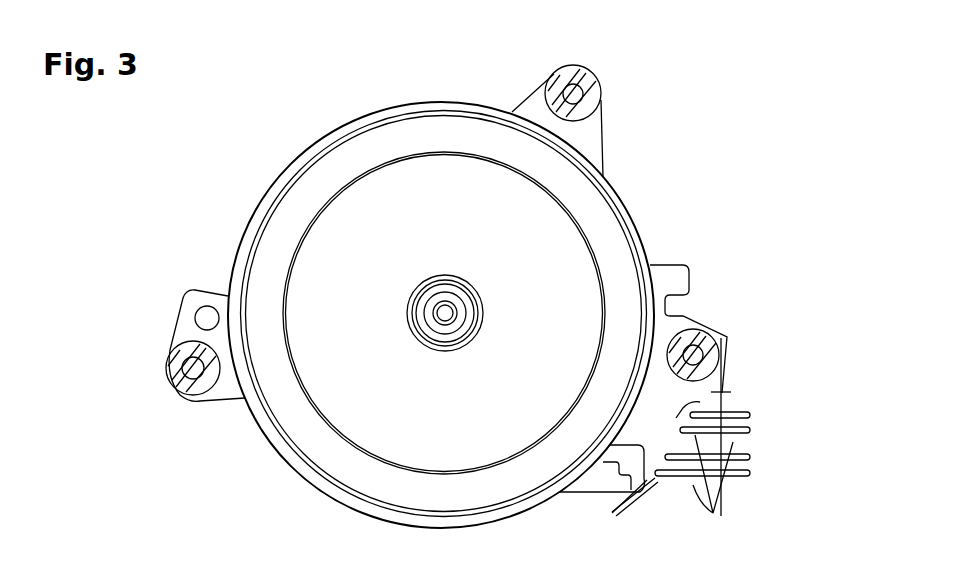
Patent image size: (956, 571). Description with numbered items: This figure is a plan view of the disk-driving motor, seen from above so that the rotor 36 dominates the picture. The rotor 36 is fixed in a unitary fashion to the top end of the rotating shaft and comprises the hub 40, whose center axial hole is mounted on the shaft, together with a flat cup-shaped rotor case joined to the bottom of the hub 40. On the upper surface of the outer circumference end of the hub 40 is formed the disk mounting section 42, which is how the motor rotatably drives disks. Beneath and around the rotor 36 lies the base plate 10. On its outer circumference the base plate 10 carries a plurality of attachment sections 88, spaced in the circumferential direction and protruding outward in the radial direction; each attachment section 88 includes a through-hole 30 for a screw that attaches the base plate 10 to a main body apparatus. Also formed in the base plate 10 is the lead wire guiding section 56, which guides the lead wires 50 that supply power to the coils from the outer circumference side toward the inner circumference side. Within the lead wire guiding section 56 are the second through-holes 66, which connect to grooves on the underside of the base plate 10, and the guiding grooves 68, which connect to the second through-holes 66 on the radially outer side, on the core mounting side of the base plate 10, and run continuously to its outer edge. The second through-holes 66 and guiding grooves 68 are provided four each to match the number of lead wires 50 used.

The base plate 10 is at (723, 392).
The through-hole 30 is at (603, 100).
The rotor 36 is at (240, 212).
The hub 40 is at (568, 257).
The disk mounting section 42 is at (587, 208).
The lead wires 50 is at (772, 487).
The lead wire guiding section 56 is at (668, 500).
The second through-holes 66 is at (682, 413).
The guiding grooves 68 is at (713, 513).
The attachment sections 88 is at (596, 68).